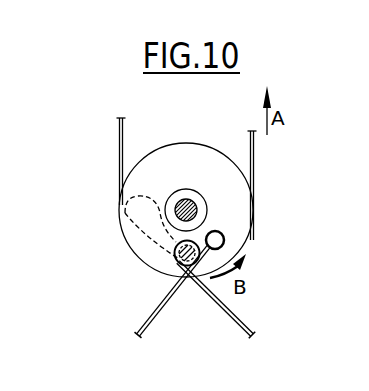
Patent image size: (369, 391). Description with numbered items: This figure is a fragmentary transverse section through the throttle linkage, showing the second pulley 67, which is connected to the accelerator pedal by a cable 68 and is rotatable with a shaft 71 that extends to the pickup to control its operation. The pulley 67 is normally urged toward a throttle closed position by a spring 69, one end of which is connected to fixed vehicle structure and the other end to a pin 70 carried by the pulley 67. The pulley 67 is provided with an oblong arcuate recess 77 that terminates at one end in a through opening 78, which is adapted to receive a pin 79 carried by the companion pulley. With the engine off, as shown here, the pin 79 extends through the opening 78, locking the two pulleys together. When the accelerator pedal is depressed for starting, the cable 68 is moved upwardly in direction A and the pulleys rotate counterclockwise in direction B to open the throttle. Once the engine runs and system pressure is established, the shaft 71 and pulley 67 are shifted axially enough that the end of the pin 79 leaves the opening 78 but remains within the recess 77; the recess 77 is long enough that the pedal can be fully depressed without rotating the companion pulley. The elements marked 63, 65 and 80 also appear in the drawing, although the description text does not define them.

The left guide post 63 is at (119, 148).
The first pivoted arm 65 is at (228, 313).
The second pulley 67 is at (199, 168).
The cable 68 is at (254, 159).
The spring 69 is at (152, 316).
The pin 70 is at (224, 243).
The shaft 71 is at (197, 211).
The recess 77 is at (142, 207).
The through opening 78 is at (175, 257).
The pin 79 is at (183, 264).
The cam follower edge (hidden) 80 is at (122, 228).